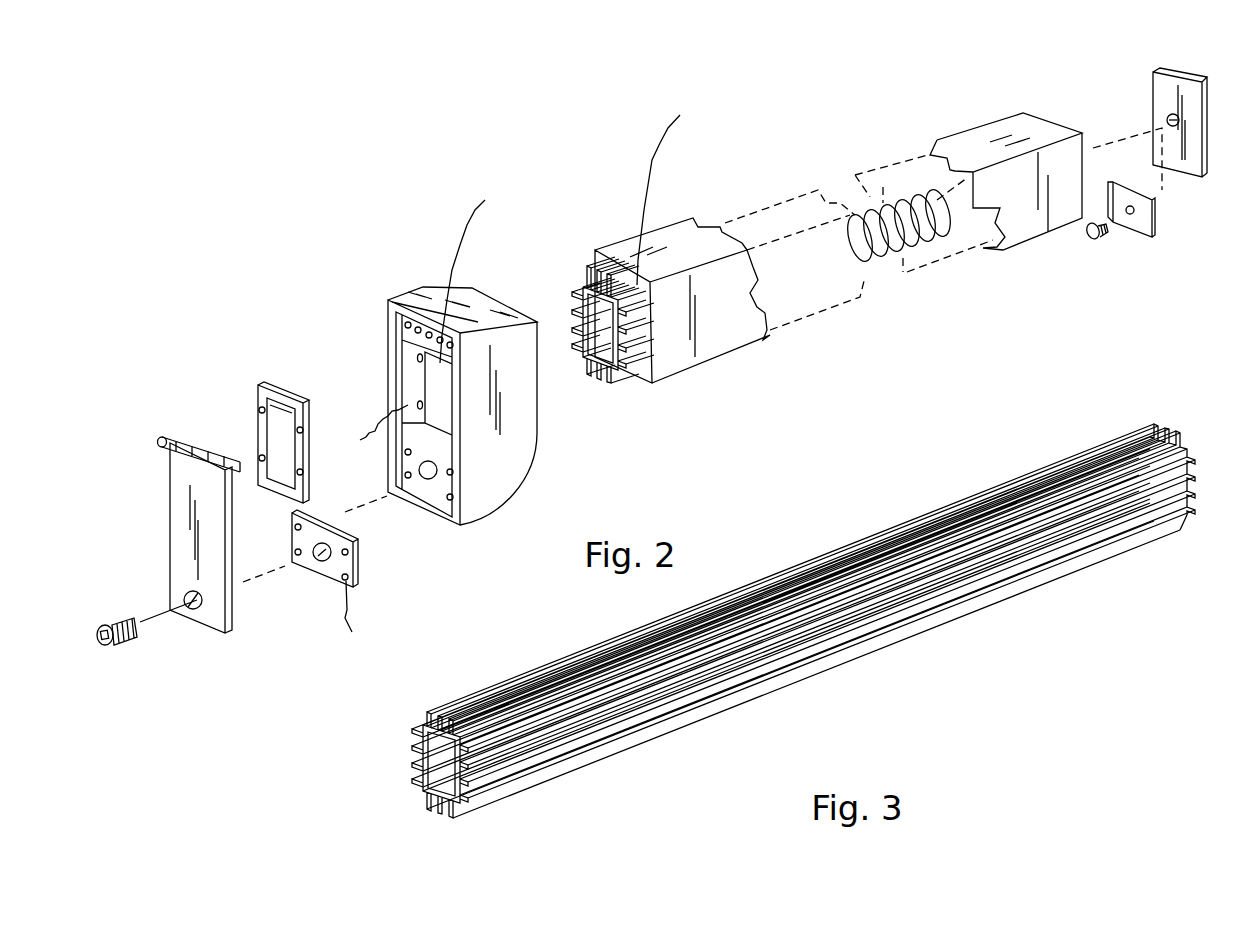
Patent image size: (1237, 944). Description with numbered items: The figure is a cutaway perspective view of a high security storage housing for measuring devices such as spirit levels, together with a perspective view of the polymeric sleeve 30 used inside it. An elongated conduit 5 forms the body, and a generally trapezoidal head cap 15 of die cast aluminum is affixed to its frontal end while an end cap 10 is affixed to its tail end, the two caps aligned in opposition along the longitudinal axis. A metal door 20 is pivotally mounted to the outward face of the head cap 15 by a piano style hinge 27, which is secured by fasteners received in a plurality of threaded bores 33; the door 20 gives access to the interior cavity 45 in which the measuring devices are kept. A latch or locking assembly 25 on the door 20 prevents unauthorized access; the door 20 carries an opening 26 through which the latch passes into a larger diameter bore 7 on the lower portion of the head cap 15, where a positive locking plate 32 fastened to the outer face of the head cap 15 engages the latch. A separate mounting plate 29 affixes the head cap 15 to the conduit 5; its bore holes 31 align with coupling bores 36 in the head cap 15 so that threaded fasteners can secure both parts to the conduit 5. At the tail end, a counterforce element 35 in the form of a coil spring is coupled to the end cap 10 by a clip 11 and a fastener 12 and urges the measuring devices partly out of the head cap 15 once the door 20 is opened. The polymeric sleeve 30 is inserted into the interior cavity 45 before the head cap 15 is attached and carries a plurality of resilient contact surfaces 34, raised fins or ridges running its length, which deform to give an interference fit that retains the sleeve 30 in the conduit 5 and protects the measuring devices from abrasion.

In FIG. 2, the elongated conduit 5 is at (713, 364).
In FIG. 2, the larger diameter bore 7 is at (429, 481).
In FIG. 2, the end cap 10 is at (1153, 92).
In FIG. 2, the clip 11 is at (1140, 233).
In FIG. 2, the fastener 12 is at (1096, 242).
In FIG. 2, the head cap 15 is at (503, 500).
In FIG. 2, the door 20 is at (180, 522).
In FIG. 2, the locking assembly 25 is at (113, 625).
In FIG. 2, the hole 26 is at (194, 609).
In FIG. 2, the hinge 27 is at (195, 436).
In FIG. 2, the mounting plate 29 is at (272, 383).
In FIG. 2, the polymeric sleeve 30 is at (588, 272).
In FIG. 3, the polymeric sleeve 30 is at (666, 742).
In FIG. 2, the bore holes 31 is at (302, 430).
In FIG. 2, the locking plate 32 is at (357, 564).
In FIG. 2, the threaded bores 33 is at (422, 357).
In FIG. 3, the resilient contact surfaces 34 is at (975, 597).
In FIG. 2, the counterforce element 35 is at (878, 263).
In FIG. 2, the coupling bores 36 is at (416, 356).
In FIG. 3, the interior cavity 45 is at (445, 777).